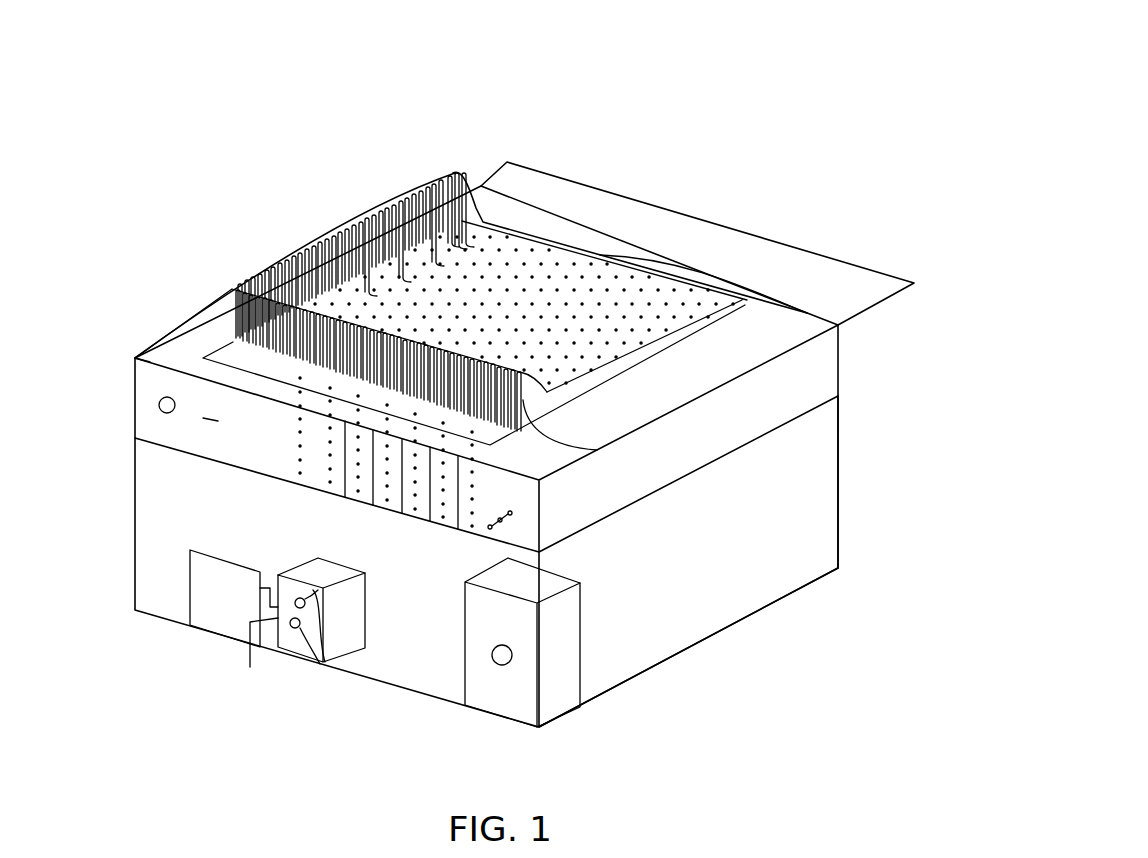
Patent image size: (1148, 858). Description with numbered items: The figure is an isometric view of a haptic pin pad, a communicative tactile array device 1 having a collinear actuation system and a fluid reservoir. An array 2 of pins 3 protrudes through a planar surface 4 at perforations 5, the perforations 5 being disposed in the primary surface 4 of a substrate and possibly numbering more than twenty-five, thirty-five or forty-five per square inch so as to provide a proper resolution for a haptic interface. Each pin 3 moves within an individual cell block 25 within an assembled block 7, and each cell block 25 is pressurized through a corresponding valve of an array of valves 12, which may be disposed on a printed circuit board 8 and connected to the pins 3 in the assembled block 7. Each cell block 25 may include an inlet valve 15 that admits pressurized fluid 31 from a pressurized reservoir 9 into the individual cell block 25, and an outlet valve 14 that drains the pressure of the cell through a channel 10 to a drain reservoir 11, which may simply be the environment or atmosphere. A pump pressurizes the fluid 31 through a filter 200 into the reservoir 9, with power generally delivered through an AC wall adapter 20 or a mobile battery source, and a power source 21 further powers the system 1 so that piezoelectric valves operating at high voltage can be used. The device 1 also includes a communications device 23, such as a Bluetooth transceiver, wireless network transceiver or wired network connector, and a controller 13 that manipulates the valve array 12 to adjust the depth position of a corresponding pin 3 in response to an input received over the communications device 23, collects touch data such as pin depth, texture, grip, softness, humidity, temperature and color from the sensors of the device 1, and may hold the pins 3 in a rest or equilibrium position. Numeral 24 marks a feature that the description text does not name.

The communicative tactile array device 1 is at (762, 74).
The array 2 is at (488, 182).
The pin 3 is at (460, 168).
The planar surface 4 is at (600, 208).
The perforations 5 is at (668, 290).
The assembled block 7 is at (136, 358).
The printed circuit board 8 is at (178, 452).
The pressurized reservoir 9 is at (764, 554).
The channel 10 is at (397, 668).
The drain reservoir 11 is at (318, 667).
The array of valves 12 is at (136, 447).
The controller 13 is at (485, 697).
The outlet valve 14 is at (275, 645).
The inlet valve 15 is at (300, 477).
The AC wall adapter 20 is at (577, 685).
The power source 21 is at (228, 560).
The communications device 23 is at (150, 410).
The film flap 24 is at (182, 347).
The cell block 25 is at (503, 475).
The pressurized fluid 31 is at (647, 653).
The filter 200 is at (367, 573).